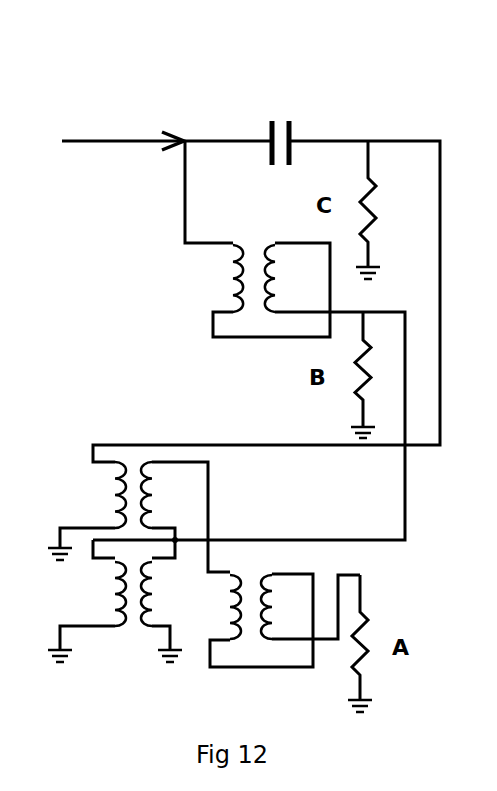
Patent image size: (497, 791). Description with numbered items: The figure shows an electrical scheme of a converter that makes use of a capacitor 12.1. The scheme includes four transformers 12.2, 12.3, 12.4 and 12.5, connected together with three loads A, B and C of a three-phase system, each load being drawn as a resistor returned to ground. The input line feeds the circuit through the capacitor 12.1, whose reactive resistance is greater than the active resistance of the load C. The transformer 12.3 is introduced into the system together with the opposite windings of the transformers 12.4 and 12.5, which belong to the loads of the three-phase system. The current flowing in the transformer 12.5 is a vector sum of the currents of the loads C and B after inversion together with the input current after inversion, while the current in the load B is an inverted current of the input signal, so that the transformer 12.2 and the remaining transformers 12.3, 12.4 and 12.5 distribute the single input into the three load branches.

The capacitor 12.1 is at (306, 129).
The transformer 12.2 is at (226, 304).
The transformer 12.3 is at (184, 491).
The transformer 12.4 is at (93, 618).
The transformer 12.5 is at (223, 627).